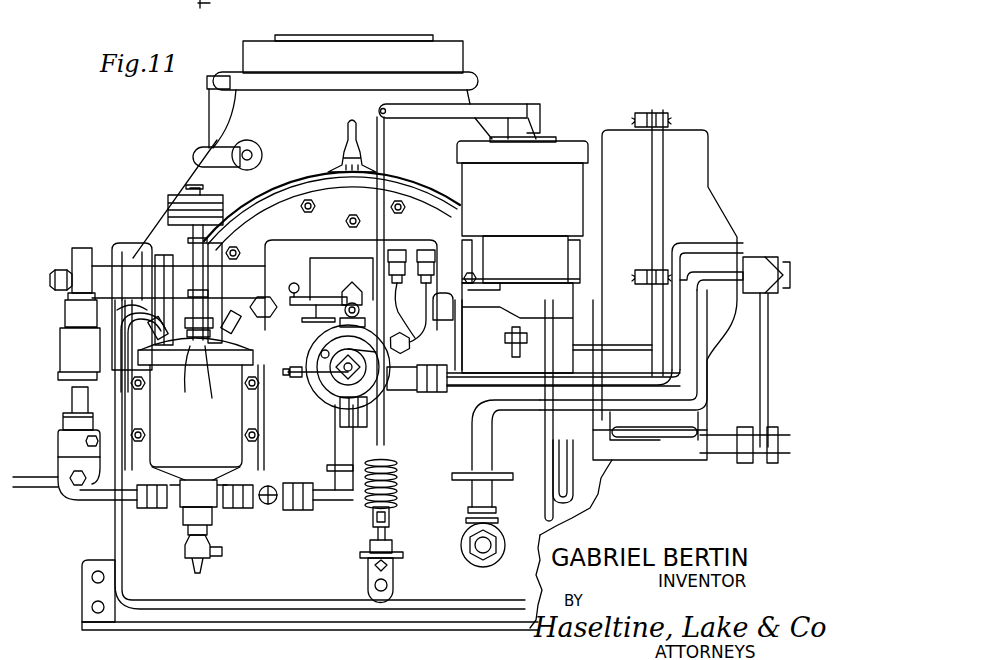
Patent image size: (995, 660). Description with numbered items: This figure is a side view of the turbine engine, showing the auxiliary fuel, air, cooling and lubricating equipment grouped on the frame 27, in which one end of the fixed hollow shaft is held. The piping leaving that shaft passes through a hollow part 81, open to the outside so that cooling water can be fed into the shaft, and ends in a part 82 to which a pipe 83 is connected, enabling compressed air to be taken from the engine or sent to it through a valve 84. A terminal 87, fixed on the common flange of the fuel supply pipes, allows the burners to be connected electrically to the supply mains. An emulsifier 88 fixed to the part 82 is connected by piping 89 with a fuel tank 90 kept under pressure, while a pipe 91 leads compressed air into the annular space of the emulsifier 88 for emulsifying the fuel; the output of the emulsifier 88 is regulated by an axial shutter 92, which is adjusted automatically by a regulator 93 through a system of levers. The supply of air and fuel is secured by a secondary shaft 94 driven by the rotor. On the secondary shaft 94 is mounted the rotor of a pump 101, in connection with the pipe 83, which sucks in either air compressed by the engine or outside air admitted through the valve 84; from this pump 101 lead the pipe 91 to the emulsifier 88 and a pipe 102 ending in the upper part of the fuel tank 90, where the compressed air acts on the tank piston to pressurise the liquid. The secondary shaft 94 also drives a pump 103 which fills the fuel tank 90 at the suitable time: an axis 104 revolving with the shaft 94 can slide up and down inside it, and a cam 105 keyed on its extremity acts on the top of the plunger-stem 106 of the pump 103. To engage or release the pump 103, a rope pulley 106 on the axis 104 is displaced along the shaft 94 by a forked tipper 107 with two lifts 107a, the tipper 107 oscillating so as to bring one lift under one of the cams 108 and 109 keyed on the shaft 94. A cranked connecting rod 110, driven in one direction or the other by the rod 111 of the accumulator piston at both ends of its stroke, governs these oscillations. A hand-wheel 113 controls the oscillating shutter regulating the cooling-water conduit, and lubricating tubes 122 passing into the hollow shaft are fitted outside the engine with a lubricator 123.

The frame 27 is at (82, 592).
The hollow part 81 is at (380, 438).
The part 82 is at (395, 395).
The pipe 83 is at (463, 396).
The valve 84 is at (470, 538).
The terminal 87 is at (293, 380).
The emulsifier 88 is at (335, 441).
The piping 89 is at (334, 468).
The fuel tank 90 is at (234, 458).
The pipe 91 is at (490, 383).
The axial shutter 92 is at (330, 398).
The regulator 93 is at (556, 170).
The secondary shaft 94 is at (263, 258).
The pump 101 is at (700, 152).
The pipe 102 is at (298, 604).
The pump 103 is at (64, 442).
The axis 104 is at (50, 281).
The cam 105 is at (78, 254).
The plunger-stem 106 is at (78, 318).
The forked tipper 107 is at (211, 372).
The lifts 107a is at (240, 333).
The cam 108 is at (167, 257).
The cam 109 is at (236, 318).
The cranked connecting rod 110 is at (213, 247).
The rod 111 is at (195, 300).
The hand-wheel 113 is at (319, 297).
The tubes 122 is at (409, 340).
The lubricator 123 is at (425, 250).